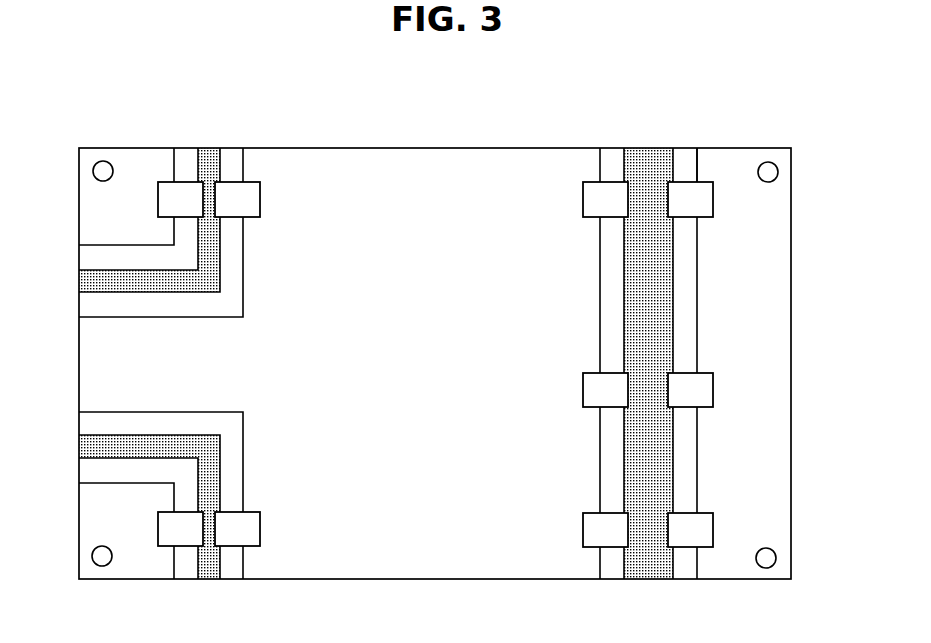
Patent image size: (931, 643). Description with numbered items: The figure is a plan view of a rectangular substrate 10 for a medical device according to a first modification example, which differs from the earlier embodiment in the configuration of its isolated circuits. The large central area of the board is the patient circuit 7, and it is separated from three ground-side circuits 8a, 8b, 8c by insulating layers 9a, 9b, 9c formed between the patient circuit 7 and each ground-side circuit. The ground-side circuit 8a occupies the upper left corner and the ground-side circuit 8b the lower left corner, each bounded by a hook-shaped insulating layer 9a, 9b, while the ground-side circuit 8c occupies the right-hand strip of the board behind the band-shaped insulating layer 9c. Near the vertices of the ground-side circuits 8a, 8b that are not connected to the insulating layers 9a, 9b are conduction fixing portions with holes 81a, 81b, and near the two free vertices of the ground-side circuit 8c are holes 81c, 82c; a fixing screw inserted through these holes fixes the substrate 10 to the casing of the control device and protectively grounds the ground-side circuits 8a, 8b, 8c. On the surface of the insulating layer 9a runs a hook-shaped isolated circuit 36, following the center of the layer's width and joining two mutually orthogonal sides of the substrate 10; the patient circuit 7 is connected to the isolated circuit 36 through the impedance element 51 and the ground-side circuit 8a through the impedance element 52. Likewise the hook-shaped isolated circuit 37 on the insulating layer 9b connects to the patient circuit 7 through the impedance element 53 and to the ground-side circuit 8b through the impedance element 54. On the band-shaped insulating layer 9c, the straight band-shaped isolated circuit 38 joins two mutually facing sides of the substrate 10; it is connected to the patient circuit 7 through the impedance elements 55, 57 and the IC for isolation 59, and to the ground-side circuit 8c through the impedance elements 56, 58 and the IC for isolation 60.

The substrate 10 is at (484, 133).
The patient circuit 7 is at (410, 172).
The ground-side circuit 8a is at (90, 212).
The ground-side circuit 8b is at (90, 512).
The ground-side circuit 8c is at (767, 270).
The insulating layer 9a is at (90, 258).
The insulating layer 9b is at (90, 470).
The insulating layer 9c is at (612, 160).
The isolated circuit 36 is at (210, 158).
The isolated circuit 37 is at (207, 568).
The isolated circuit 38 is at (650, 565).
The impedance element 51 is at (250, 181).
The impedance element 52 is at (168, 181).
The impedance element 53 is at (248, 549).
The impedance element 54 is at (165, 549).
The impedance element 55 is at (595, 181).
The impedance element 56 is at (700, 181).
The impedance element 57 is at (590, 550).
The impedance element 58 is at (700, 550).
The IC for isolation 59 is at (583, 387).
The IC for isolation 60 is at (713, 390).
The hole 81a is at (105, 161).
The hole 81b is at (103, 566).
The hole 81c is at (765, 162).
The hole 82c is at (766, 569).